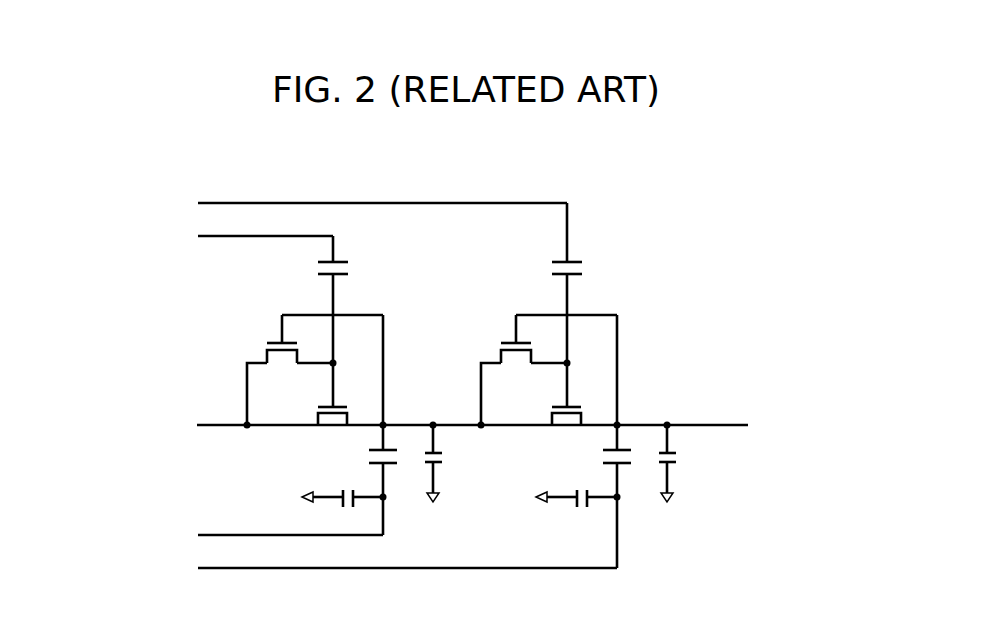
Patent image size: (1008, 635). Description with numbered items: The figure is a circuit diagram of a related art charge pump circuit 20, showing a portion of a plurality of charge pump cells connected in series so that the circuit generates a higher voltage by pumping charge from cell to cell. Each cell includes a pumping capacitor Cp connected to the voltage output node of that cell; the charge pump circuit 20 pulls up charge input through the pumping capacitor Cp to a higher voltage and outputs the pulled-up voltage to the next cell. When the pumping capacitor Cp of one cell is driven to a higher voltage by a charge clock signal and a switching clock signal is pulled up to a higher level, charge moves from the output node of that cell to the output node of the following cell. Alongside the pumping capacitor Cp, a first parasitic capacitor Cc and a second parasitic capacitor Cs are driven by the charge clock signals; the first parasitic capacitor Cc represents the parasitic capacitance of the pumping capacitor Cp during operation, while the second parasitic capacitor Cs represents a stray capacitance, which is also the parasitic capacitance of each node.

The charge pump circuit 20 is at (724, 291).
The pumping capacitor Cp is at (482, 459).
The first parasitic capacitor Cc is at (459, 511).
The second parasitic capacitor Cs is at (565, 463).